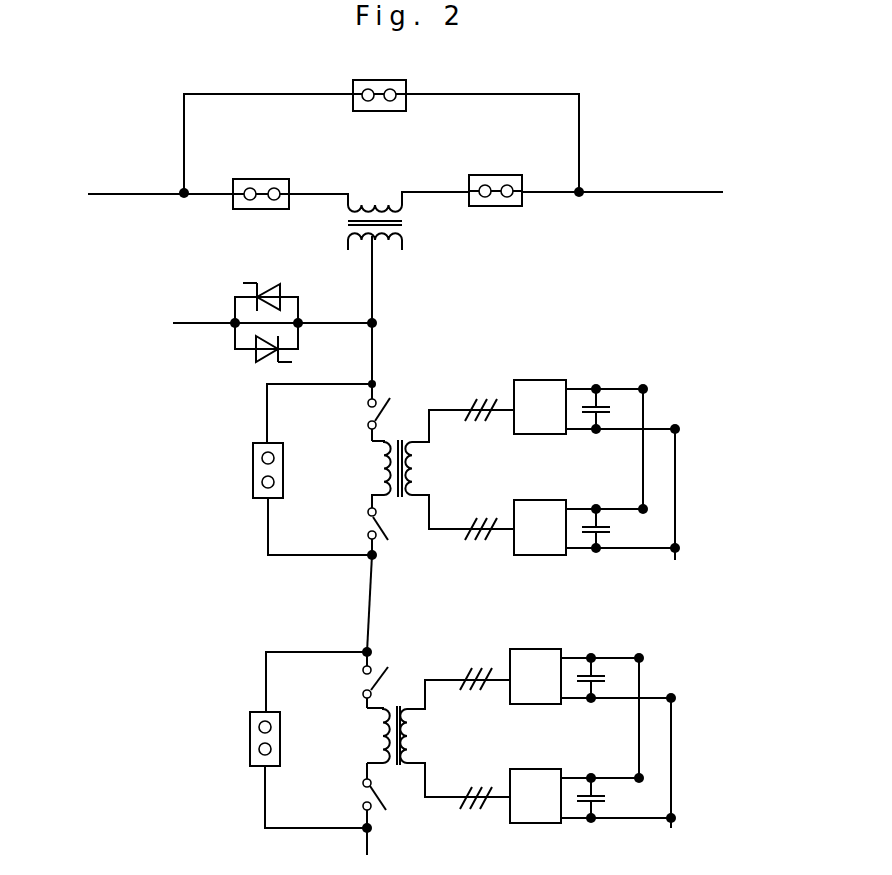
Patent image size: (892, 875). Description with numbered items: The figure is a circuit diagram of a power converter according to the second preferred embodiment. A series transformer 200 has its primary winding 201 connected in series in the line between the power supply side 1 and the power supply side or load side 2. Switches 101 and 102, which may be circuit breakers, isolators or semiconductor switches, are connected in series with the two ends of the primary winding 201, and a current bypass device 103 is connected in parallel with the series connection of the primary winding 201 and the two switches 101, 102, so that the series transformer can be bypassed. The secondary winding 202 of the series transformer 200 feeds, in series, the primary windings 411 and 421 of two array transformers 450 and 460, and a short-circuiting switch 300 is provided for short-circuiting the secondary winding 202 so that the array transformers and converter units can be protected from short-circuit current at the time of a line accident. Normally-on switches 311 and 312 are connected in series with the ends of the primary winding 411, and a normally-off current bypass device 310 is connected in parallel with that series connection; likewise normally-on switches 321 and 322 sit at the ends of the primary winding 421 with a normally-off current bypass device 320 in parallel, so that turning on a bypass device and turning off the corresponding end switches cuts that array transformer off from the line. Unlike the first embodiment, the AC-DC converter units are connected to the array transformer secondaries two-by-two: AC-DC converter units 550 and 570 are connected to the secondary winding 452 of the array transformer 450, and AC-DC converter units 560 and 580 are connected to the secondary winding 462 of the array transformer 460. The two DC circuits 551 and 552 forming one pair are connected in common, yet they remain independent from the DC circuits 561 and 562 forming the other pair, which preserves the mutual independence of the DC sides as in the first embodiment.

The power supply side of line 1 is at (131, 191).
The power supply side or load side of line 2 is at (628, 190).
The switch 101 is at (273, 178).
The switch 102 is at (507, 175).
The current bypass device 103 is at (392, 77).
The series transformer 200 is at (395, 212).
The primary winding of series transformer 201 is at (380, 200).
The secondary winding of series transformer 202 is at (366, 240).
The short-circuiting switch 300 is at (235, 298).
The current bypass device 310 is at (253, 472).
The normally-on switch 311 is at (362, 412).
The normally-on switch 312 is at (365, 522).
The current bypass device 320 is at (250, 738).
The normally-on switch 321 is at (363, 693).
The normally-on switch 322 is at (363, 793).
The array transformer 450 is at (443, 469).
The primary winding of array transformer 411 is at (384, 498).
The secondary winding of array transformer 452 is at (417, 470).
The array transformer 460 is at (438, 738).
The primary winding of array transformer 421 is at (385, 765).
The secondary winding of array transformer 462 is at (412, 740).
The AC-DC converter unit 550 is at (549, 380).
The DC circuit 551 is at (645, 388).
The DC circuit 552 is at (647, 507).
The AC-DC converter unit 570 is at (554, 498).
The AC-DC converter unit 560 is at (546, 649).
The DC circuit 561 is at (647, 658).
The DC circuit 562 is at (643, 777).
The AC-DC converter unit 580 is at (549, 768).